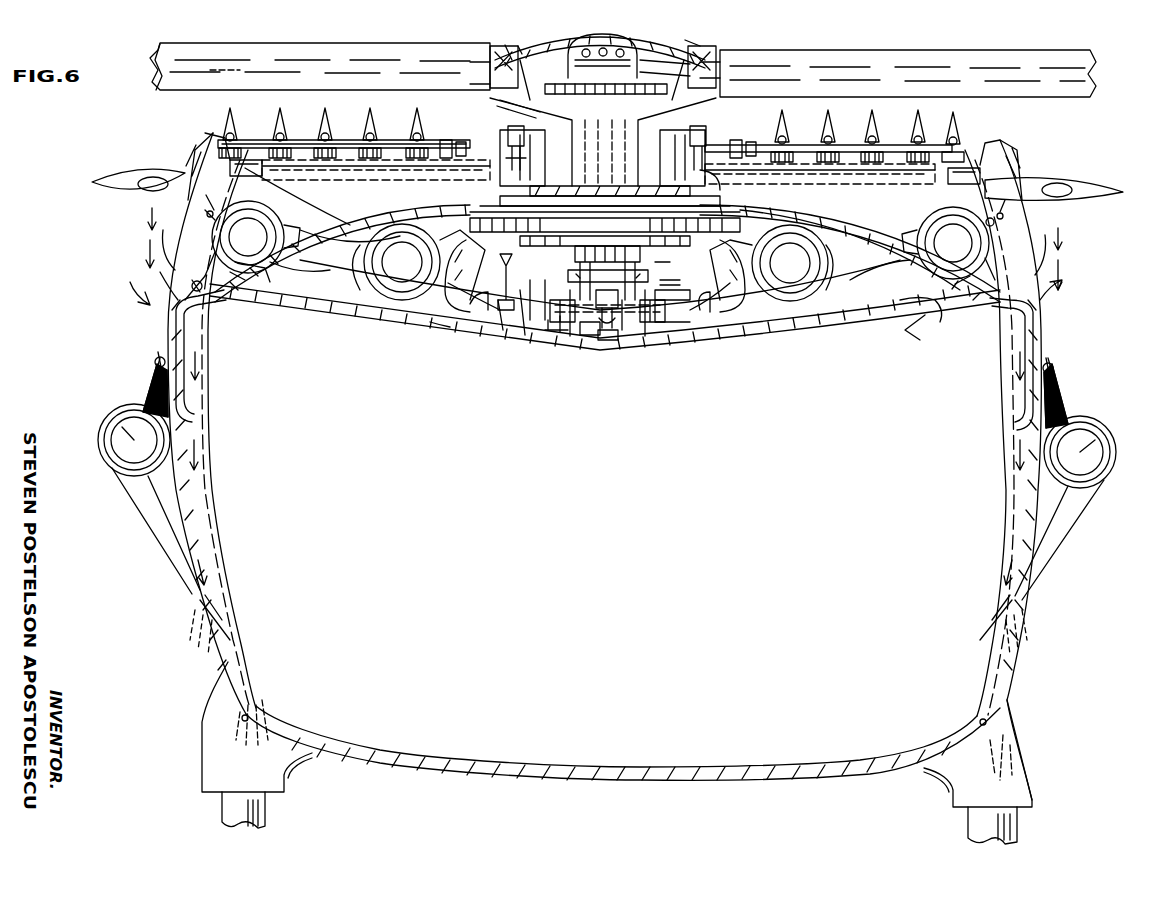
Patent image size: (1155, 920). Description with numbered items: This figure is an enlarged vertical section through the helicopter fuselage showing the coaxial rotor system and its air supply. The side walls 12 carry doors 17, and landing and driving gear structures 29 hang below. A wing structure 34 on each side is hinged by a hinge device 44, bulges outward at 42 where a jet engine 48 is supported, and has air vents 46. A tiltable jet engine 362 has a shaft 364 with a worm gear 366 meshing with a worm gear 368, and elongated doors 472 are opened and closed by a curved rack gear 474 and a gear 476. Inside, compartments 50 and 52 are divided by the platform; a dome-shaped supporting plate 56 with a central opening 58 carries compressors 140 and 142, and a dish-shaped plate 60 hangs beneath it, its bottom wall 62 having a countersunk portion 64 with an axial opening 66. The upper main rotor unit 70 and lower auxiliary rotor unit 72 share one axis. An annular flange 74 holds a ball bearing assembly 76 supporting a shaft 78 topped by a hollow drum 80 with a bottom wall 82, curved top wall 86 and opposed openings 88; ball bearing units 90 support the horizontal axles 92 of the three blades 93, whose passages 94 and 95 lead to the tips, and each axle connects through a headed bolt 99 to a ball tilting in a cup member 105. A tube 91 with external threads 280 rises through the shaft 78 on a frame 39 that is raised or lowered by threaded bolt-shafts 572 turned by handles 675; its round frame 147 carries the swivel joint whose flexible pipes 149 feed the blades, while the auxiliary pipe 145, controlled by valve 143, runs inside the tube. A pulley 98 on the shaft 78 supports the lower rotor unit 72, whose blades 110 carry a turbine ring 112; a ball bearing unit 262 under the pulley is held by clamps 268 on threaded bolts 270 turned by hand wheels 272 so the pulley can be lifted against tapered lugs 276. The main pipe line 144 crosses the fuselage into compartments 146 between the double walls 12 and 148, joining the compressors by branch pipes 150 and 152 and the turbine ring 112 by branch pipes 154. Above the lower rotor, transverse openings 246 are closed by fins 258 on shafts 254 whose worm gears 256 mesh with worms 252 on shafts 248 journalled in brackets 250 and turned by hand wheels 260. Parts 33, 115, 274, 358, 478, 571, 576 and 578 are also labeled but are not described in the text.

The side wall 12 is at (215, 514).
The door 17 is at (242, 719).
The landing and driving gear structure 29 is at (207, 819).
The central bracket 33 is at (614, 304).
The wing structure 34 is at (116, 518).
The frame 39 is at (672, 273).
The bulge 42 is at (100, 444).
The hinge device 44 is at (154, 364).
The air vent 46 is at (190, 606).
The jet engine 48 is at (122, 427).
The compartment 50 is at (342, 220).
The compartment 52 is at (597, 539).
The dome-shaped supporting plate 56 is at (380, 222).
The central opening 58 is at (660, 196).
The dish-shaped plate 60 is at (445, 326).
The bottom wall 62 is at (672, 306).
The countersunk portion 64 is at (550, 334).
The axial opening 66 is at (588, 338).
The upper main rotor unit 70 is at (495, 38).
The lower auxiliary rotor unit 72 is at (492, 148).
The annular flange 74 is at (670, 136).
The ball bearing assembly 76 is at (572, 126).
The shaft 78 is at (530, 188).
The hollow drum 80 is at (715, 46).
The bottom wall 82 is at (528, 126).
The curved top wall 86 is at (518, 44).
The opening 88 is at (488, 82).
The ball bearing unit 90 is at (492, 52).
The tube 91 is at (667, 250).
The oscillatable horizontal axle 92 is at (485, 60).
The blade 93 is at (352, 45).
The central passage 94 is at (568, 62).
The central passage 95 is at (275, 48).
The pulley 98 is at (750, 214).
The headed bolt 99 is at (614, 87).
The cup member 105 is at (640, 36).
The blade 110 is at (385, 180).
The turbine ring 112 is at (258, 136).
The base plate 115 is at (545, 200).
The compressor 140 is at (256, 246).
The compressor 142 is at (410, 271).
The valve 143 is at (606, 342).
The main pipe line 144 is at (356, 304).
The auxiliary air and gas pipe 145 is at (624, 334).
The compartment 146 is at (196, 422).
The round frame 147 is at (596, 273).
The outer wall 148 is at (200, 470).
The flexible pipe 149 is at (667, 61).
The branch pipe line 150 is at (318, 300).
The pipe 152 is at (490, 290).
The branch pipe 154 is at (340, 210).
The transverse opening 246 is at (330, 130).
The shaft 248 is at (283, 128).
The bracket 250 is at (446, 138).
The worm 252 is at (372, 130).
The shaft 254 is at (225, 132).
The worm gear 256 is at (420, 130).
The fin 258 is at (955, 140).
The hand wheel 260 is at (598, 172).
The ball bearing unit 262 is at (515, 240).
The clamp 268 is at (300, 190).
The threaded bolt 270 is at (475, 322).
The hand wheel 272 is at (503, 336).
The right link 274 is at (965, 308).
The tapered lug 276 is at (985, 334).
The external linear thread 280 is at (625, 264).
The wing pivot 358 is at (150, 176).
The jet engine 362 is at (602, 176).
The shaft 364 is at (978, 211).
The worm gear 366 is at (200, 168).
The worm gear 368 is at (180, 204).
The elongated door 472 is at (132, 240).
The curved rack gear 474 is at (262, 290).
The gear 476 is at (215, 296).
The rotation arrow 478 is at (172, 292).
The rod 571 is at (536, 322).
The threaded bolt 572 is at (565, 326).
The screw 576 is at (506, 340).
The toothed rack 578 is at (605, 220).
The handle 675 is at (572, 340).